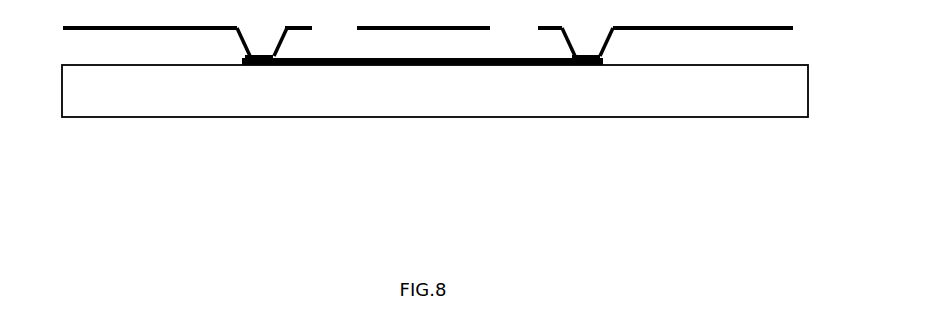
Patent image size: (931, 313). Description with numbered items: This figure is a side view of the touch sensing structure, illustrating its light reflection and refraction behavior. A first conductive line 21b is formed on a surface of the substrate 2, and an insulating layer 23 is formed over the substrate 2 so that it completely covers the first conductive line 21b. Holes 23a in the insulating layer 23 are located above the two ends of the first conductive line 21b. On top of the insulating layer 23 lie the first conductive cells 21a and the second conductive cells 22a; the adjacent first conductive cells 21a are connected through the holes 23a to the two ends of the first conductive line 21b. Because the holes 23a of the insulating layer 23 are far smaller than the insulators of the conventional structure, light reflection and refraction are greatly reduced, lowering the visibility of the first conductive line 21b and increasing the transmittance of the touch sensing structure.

The substrate 2 is at (715, 105).
The first conductive cells 21a is at (100, 28).
The first conductive line 21b is at (310, 62).
The second conductive cells 22a is at (483, 28).
The insulating layer 23 is at (450, 45).
The holes 23a is at (259, 32).